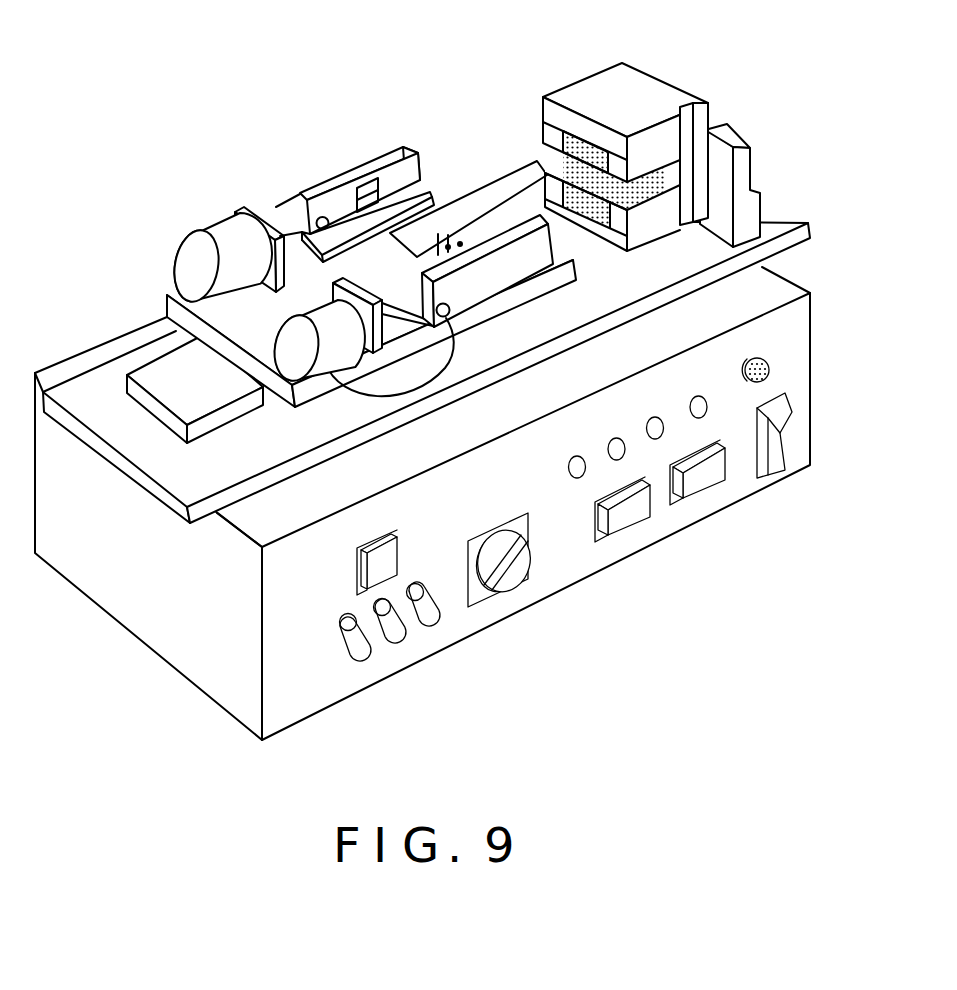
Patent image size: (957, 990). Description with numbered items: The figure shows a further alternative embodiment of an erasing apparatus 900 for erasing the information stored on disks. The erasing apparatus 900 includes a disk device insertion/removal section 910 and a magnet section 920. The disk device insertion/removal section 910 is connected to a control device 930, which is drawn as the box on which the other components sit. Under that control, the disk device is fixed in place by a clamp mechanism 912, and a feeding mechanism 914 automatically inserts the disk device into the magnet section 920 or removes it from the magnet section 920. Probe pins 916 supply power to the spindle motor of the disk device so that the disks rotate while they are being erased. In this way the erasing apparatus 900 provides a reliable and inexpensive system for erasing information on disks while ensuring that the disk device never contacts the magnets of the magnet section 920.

The erasing apparatus 900 is at (160, 53).
The disk device insertion/removal section 910 is at (268, 196).
The clamp mechanism 912 is at (222, 247).
The feeding mechanism 914 is at (176, 378).
The probe pins 916 is at (472, 218).
The magnet section 920 is at (576, 74).
The control device 930 is at (572, 568).